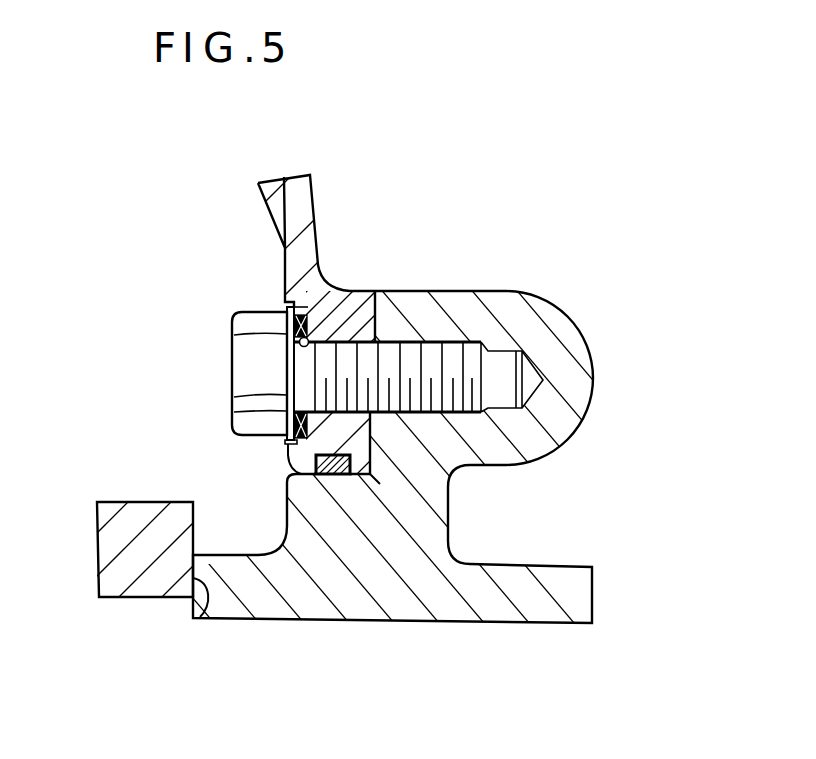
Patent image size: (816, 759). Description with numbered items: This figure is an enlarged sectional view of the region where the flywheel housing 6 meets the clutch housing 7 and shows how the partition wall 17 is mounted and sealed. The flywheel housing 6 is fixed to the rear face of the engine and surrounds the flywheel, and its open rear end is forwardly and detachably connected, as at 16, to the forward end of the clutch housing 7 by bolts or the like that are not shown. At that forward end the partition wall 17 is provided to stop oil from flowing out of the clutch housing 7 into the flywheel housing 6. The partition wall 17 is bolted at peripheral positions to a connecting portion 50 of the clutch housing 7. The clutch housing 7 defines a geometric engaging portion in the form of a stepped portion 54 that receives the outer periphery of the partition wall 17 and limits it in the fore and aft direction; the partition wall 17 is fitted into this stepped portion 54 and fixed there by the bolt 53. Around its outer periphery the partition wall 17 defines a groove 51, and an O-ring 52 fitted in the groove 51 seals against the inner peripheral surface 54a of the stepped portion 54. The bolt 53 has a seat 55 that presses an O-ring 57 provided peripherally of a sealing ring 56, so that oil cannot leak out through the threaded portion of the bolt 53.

The connecting portion 50 is at (478, 254).
The clutch housing 7 is at (495, 607).
The flywheel housing 6 is at (115, 587).
The connection 16 is at (206, 575).
The partition wall 17 is at (295, 206).
The stepped portion 54 is at (373, 430).
The inner peripheral surface 54a is at (288, 466).
The bolt 53 is at (242, 362).
The seat 55 is at (232, 398).
The O-ring 57 is at (328, 285).
The sealing ring 56 is at (312, 327).
The O-ring 52 is at (322, 466).
The groove 51 is at (343, 477).